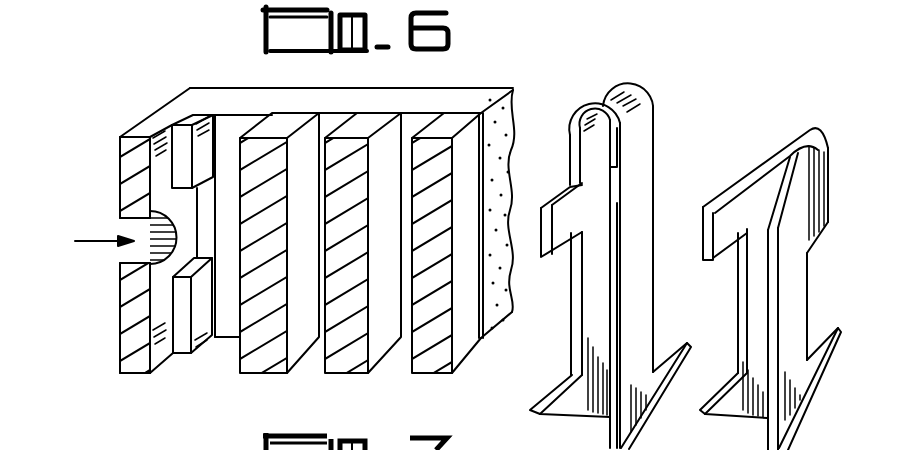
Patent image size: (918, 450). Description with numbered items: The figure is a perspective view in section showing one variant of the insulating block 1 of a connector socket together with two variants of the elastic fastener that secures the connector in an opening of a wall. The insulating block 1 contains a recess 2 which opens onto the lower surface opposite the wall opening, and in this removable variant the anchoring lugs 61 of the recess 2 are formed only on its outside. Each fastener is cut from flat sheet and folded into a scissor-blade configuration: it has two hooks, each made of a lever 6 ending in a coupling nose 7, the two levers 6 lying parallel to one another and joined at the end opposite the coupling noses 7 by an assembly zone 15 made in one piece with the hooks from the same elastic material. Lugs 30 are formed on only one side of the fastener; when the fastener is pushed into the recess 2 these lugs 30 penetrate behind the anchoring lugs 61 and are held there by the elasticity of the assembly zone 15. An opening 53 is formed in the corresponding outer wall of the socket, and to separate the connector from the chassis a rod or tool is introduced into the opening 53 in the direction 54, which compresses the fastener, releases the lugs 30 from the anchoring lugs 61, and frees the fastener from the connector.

The insulating block 1 is at (307, 105).
The recess 2 is at (229, 126).
The lever 6 is at (592, 284).
The coupling nose 7 is at (574, 386).
The assembly zone 15 is at (641, 106).
The lug 30 is at (565, 212).
The opening 53 is at (158, 242).
The direction 54 is at (112, 240).
The anchoring lug 61 is at (209, 165).